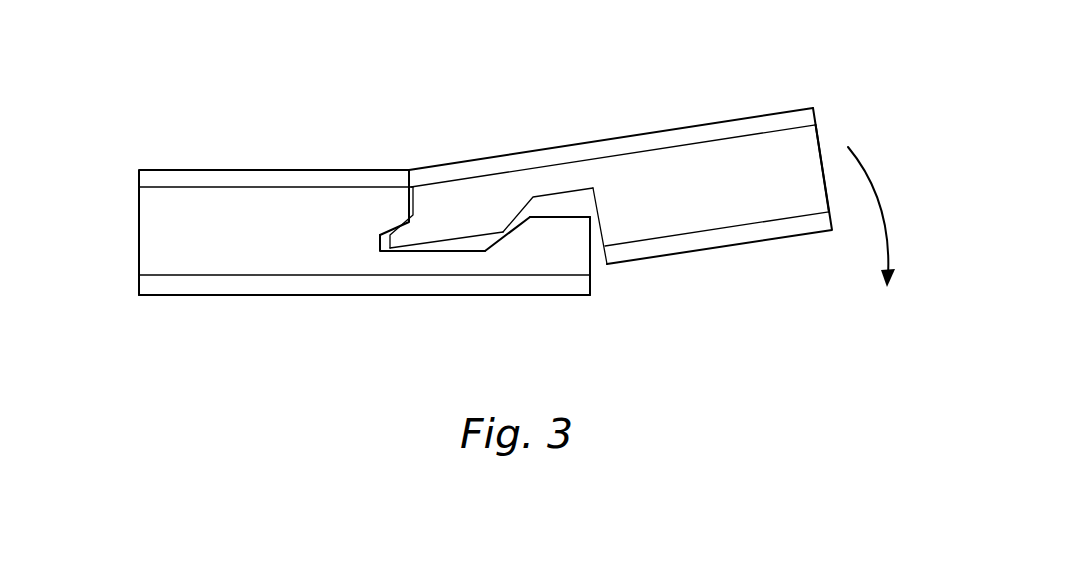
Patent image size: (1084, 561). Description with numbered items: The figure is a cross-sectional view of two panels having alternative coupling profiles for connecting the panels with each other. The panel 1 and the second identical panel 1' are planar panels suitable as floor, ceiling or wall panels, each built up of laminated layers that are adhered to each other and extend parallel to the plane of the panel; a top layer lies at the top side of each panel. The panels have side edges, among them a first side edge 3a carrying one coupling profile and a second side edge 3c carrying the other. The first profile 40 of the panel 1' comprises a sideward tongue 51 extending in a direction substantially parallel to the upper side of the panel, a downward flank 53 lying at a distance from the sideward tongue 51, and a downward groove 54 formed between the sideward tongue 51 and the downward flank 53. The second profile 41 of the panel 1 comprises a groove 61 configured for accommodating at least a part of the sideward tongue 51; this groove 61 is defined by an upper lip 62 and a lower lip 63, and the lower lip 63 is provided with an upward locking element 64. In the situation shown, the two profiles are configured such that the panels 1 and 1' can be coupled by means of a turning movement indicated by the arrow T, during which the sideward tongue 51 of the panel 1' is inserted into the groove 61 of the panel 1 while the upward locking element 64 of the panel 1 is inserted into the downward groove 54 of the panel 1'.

The panel 1 is at (372, 228).
The second identical panel 1' is at (629, 171).
The first side edge 3a is at (433, 297).
The second side edge 3c is at (517, 140).
The first profile 40 is at (480, 195).
The second profile 41 is at (543, 260).
The sideward tongue 51 is at (443, 222).
The downward flank 53 is at (598, 215).
The downward groove 54 is at (567, 205).
The groove 61 is at (381, 240).
The upper lip 62 is at (387, 203).
The lower lip 63 is at (563, 255).
The upward locking element 64 is at (500, 232).
The arrow indicating turning movement T is at (878, 205).